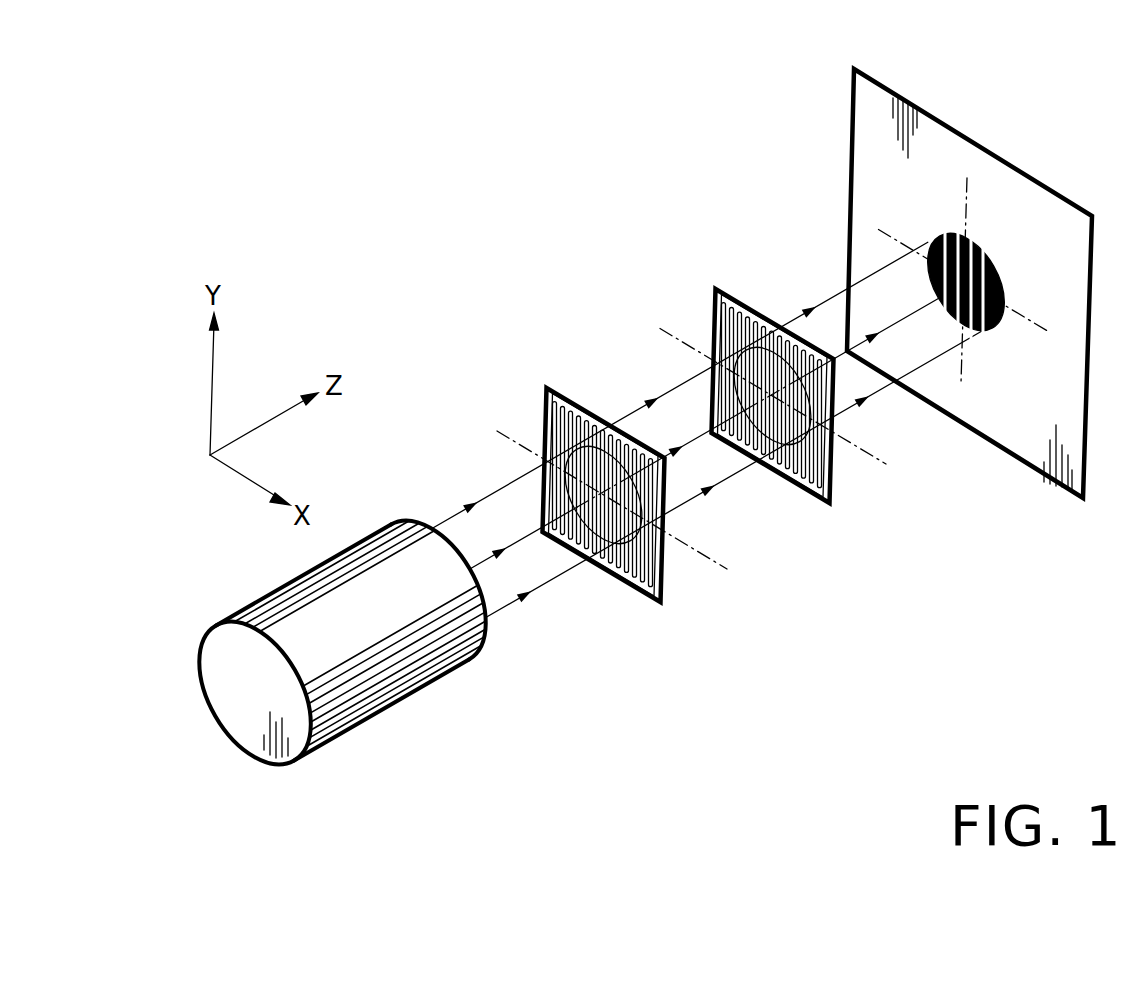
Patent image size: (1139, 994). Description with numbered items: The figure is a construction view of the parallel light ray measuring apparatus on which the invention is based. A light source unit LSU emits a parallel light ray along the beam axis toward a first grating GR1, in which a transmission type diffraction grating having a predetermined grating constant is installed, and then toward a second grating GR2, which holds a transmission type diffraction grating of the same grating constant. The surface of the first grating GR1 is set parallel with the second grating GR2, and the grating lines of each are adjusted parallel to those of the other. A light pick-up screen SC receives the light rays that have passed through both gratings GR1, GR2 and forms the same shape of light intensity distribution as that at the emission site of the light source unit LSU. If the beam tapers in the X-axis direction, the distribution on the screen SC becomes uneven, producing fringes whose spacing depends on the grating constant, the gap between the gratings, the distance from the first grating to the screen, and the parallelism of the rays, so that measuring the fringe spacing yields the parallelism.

The light source unit LSU is at (403, 697).
The first grating GR1 is at (547, 388).
The second grating GR2 is at (714, 296).
The light pick-up screen SC is at (990, 444).